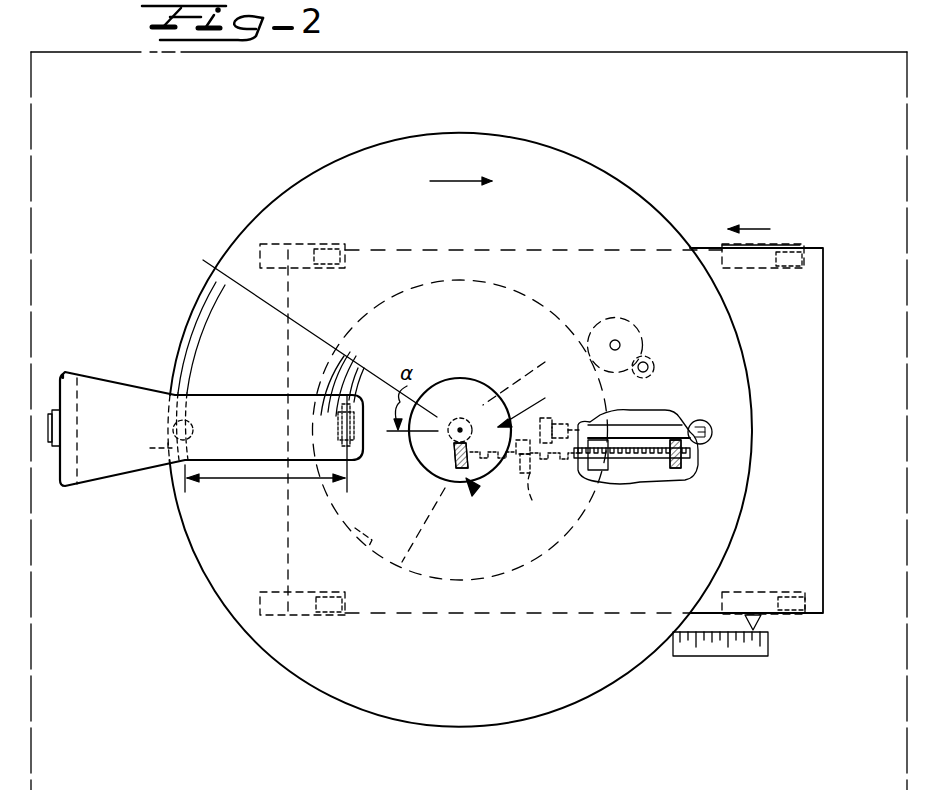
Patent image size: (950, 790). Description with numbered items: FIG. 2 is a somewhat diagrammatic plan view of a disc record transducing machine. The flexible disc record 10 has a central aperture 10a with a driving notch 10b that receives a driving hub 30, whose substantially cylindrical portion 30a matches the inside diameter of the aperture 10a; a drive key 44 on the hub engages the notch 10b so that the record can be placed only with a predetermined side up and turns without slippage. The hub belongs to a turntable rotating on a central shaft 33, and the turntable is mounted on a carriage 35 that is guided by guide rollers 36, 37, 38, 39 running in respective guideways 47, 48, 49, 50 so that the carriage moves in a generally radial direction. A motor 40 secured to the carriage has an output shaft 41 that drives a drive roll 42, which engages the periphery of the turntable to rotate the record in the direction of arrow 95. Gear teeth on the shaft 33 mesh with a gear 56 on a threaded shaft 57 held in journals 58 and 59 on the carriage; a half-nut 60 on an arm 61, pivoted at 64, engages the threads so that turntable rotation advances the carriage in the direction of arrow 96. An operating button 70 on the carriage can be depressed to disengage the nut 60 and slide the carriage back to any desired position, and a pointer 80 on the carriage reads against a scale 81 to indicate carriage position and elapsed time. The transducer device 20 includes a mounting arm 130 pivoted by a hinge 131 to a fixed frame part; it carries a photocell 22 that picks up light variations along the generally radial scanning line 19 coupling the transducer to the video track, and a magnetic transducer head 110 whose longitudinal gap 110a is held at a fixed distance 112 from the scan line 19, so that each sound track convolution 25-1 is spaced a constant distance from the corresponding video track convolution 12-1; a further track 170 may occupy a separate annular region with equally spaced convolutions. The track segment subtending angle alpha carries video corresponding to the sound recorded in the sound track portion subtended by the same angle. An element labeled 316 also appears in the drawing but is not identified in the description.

The record 10 is at (410, 725).
The central aperture 10a is at (465, 380).
The driving notch 10b is at (486, 470).
The convolution of spiral video record track 12-1 is at (200, 330).
The transverse scanning line 19 is at (194, 428).
The transducer device 20 is at (110, 480).
The photosensitive cell 22 is at (139, 437).
The convolution of spiral sound track 25-1 is at (460, 430).
The driving hub 30 is at (526, 433).
The substantially cylindrical portion 30a is at (480, 385).
The central shaft 33 is at (526, 397).
The carriage 35 is at (823, 540).
The guide roller 36 is at (338, 615).
The guide roller 37 is at (327, 250).
The guide roller 38 is at (805, 603).
The guide roller 39 is at (800, 250).
The motor 40 is at (652, 356).
The output shaft 41 is at (656, 367).
The drive roll 42 is at (617, 318).
The drive key 44 is at (470, 492).
The guideway 47 is at (275, 615).
The guideway 48 is at (284, 244).
The guideway 49 is at (750, 592).
The guideway 50 is at (755, 268).
The gear 56 is at (423, 525).
The threaded shaft 57 is at (650, 462).
The journal 58 is at (541, 492).
The journal 59 is at (688, 462).
The half-nut 60 is at (600, 472).
The arm 61 is at (652, 438).
The pivot 64 is at (640, 408).
The operating button 70 is at (710, 428).
The pointer 80 is at (758, 627).
The scale 81 is at (703, 656).
The arrow 95 is at (462, 181).
The arrow 96 is at (756, 229).
The magnetic transducer head 110 is at (327, 431).
The longitudinal gap 110a is at (412, 480).
The fixed distance 112 is at (262, 482).
The mounting arm 130 is at (100, 392).
The hinge 131 is at (48, 428).
The track 170 is at (330, 390).
The cable segment 316 is at (337, 544).